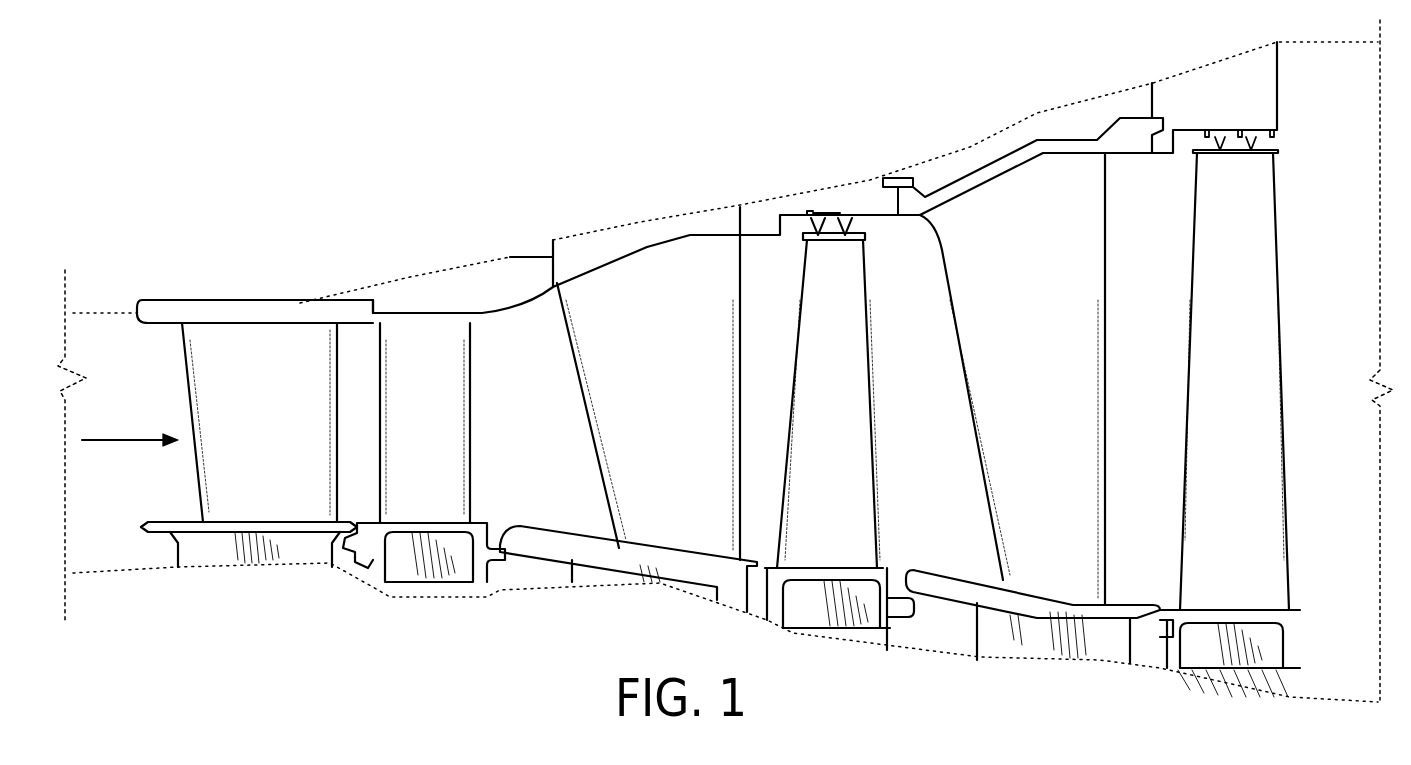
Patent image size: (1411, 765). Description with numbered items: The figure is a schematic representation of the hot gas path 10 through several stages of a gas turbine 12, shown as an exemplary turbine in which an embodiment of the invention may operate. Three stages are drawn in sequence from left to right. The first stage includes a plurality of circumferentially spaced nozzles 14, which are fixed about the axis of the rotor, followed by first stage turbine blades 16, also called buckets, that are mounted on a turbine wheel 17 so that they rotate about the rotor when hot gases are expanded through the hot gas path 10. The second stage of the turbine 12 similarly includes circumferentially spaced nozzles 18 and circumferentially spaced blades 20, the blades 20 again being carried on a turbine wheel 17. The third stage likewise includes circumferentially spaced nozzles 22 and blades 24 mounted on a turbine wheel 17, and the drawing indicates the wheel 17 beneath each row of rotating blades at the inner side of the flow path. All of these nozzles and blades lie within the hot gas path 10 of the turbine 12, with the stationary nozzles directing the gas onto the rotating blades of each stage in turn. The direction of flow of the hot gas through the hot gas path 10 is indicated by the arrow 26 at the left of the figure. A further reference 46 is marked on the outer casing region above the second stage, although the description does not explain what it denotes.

The hot gas path 10 is at (540, 342).
The gas turbine 12 is at (655, 240).
The first stage nozzles 14 is at (274, 432).
The first stage turbine blades 16 is at (437, 473).
The turbine wheel 17 is at (432, 588).
The second stage nozzles 18 is at (670, 401).
The second stage blades 20 is at (845, 412).
The third stage nozzles 22 is at (1049, 397).
The third stage blades 24 is at (1257, 430).
The arrow 26 is at (124, 440).
The seal carrier 46 is at (842, 197).